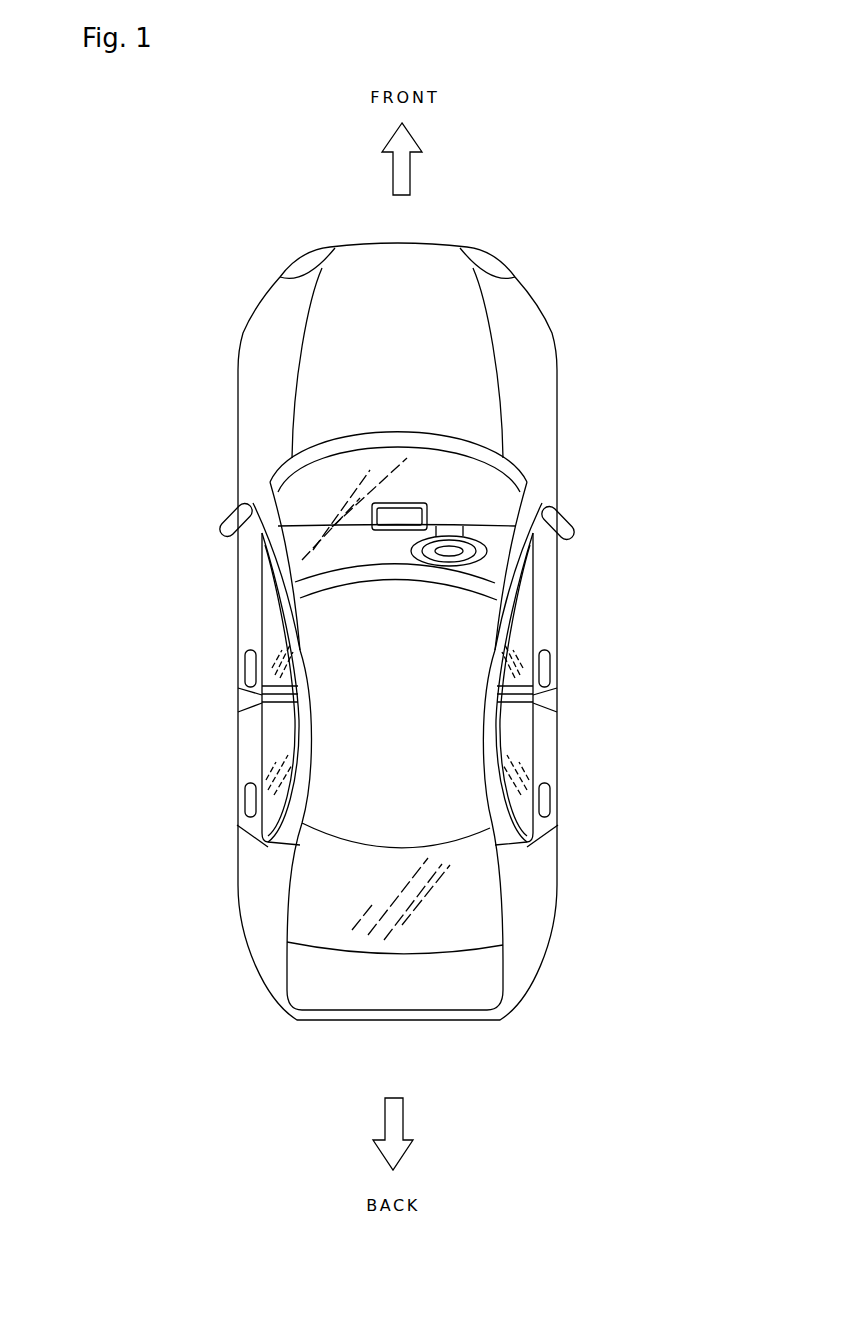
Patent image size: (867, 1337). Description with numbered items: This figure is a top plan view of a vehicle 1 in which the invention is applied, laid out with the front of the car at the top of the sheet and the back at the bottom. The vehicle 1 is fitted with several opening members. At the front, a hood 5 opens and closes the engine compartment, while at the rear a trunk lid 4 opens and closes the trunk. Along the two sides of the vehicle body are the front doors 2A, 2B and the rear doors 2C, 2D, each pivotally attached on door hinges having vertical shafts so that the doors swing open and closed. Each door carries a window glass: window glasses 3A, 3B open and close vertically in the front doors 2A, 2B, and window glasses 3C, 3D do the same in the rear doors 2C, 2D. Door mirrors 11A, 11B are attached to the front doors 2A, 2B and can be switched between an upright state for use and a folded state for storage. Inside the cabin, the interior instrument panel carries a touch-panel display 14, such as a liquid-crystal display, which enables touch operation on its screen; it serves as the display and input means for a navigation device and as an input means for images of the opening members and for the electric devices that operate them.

The vehicle 1 is at (540, 280).
The hood 5 is at (443, 268).
The touch-panel display 14 is at (433, 518).
The trunk lid 4 is at (480, 993).
The door mirror 11A is at (575, 528).
The door mirror 11B is at (219, 522).
The front door 2A is at (560, 613).
The front door 2B is at (237, 613).
The rear door 2C is at (557, 755).
The rear door 2D is at (238, 753).
The window glass 3A is at (525, 575).
The window glass 3B is at (270, 575).
The window glass 3C is at (520, 727).
The window glass 3D is at (273, 727).